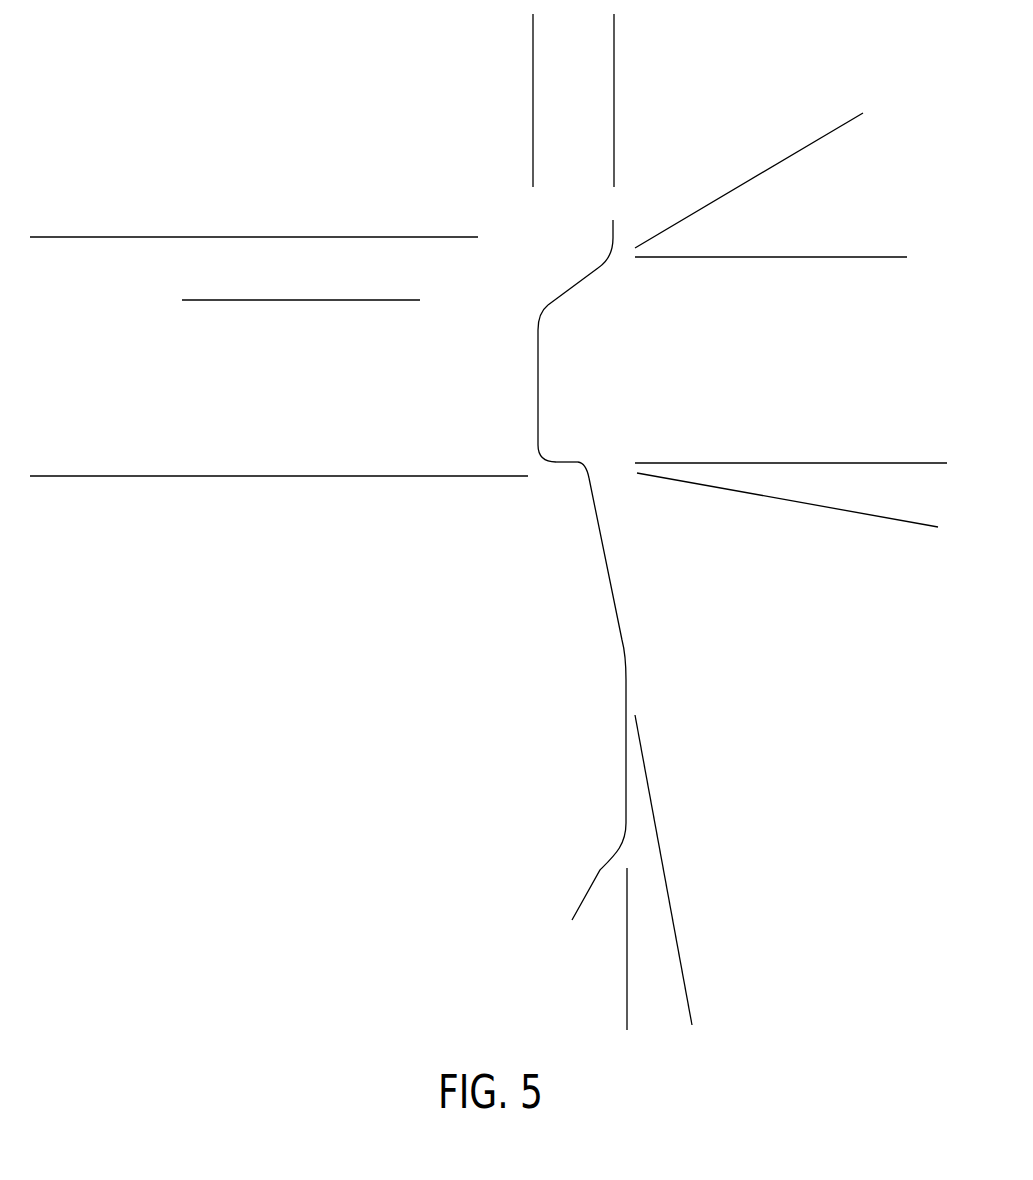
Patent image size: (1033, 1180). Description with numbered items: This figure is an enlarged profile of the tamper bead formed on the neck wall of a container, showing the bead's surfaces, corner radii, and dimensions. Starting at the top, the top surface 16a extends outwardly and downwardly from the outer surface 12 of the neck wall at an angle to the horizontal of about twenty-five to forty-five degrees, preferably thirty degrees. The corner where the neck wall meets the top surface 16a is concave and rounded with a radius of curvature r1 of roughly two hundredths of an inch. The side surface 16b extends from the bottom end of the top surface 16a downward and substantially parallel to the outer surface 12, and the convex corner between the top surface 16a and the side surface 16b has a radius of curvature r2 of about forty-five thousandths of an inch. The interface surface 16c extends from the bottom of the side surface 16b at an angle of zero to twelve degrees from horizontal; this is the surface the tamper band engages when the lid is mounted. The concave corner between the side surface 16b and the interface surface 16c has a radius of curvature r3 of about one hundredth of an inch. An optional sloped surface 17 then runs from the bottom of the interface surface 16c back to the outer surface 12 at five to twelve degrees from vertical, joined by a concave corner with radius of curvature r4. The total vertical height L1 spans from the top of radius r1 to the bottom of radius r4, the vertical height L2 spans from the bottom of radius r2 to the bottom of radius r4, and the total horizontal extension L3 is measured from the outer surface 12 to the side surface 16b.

The outer surface 12 is at (615, 224).
The top surface 16a is at (590, 275).
The side surface 16b is at (541, 370).
The interface surface 16c is at (582, 461).
The sloping surface 17 is at (607, 572).
The radius of curvature r1 is at (596, 252).
The radius of curvature r2 is at (539, 313).
The radius of curvature r3 is at (549, 448).
The radius of curvature r4 is at (581, 475).
The total vertical height L1 is at (61, 239).
The vertical height L2 is at (218, 302).
The total horizontal extension L3 is at (688, 46).